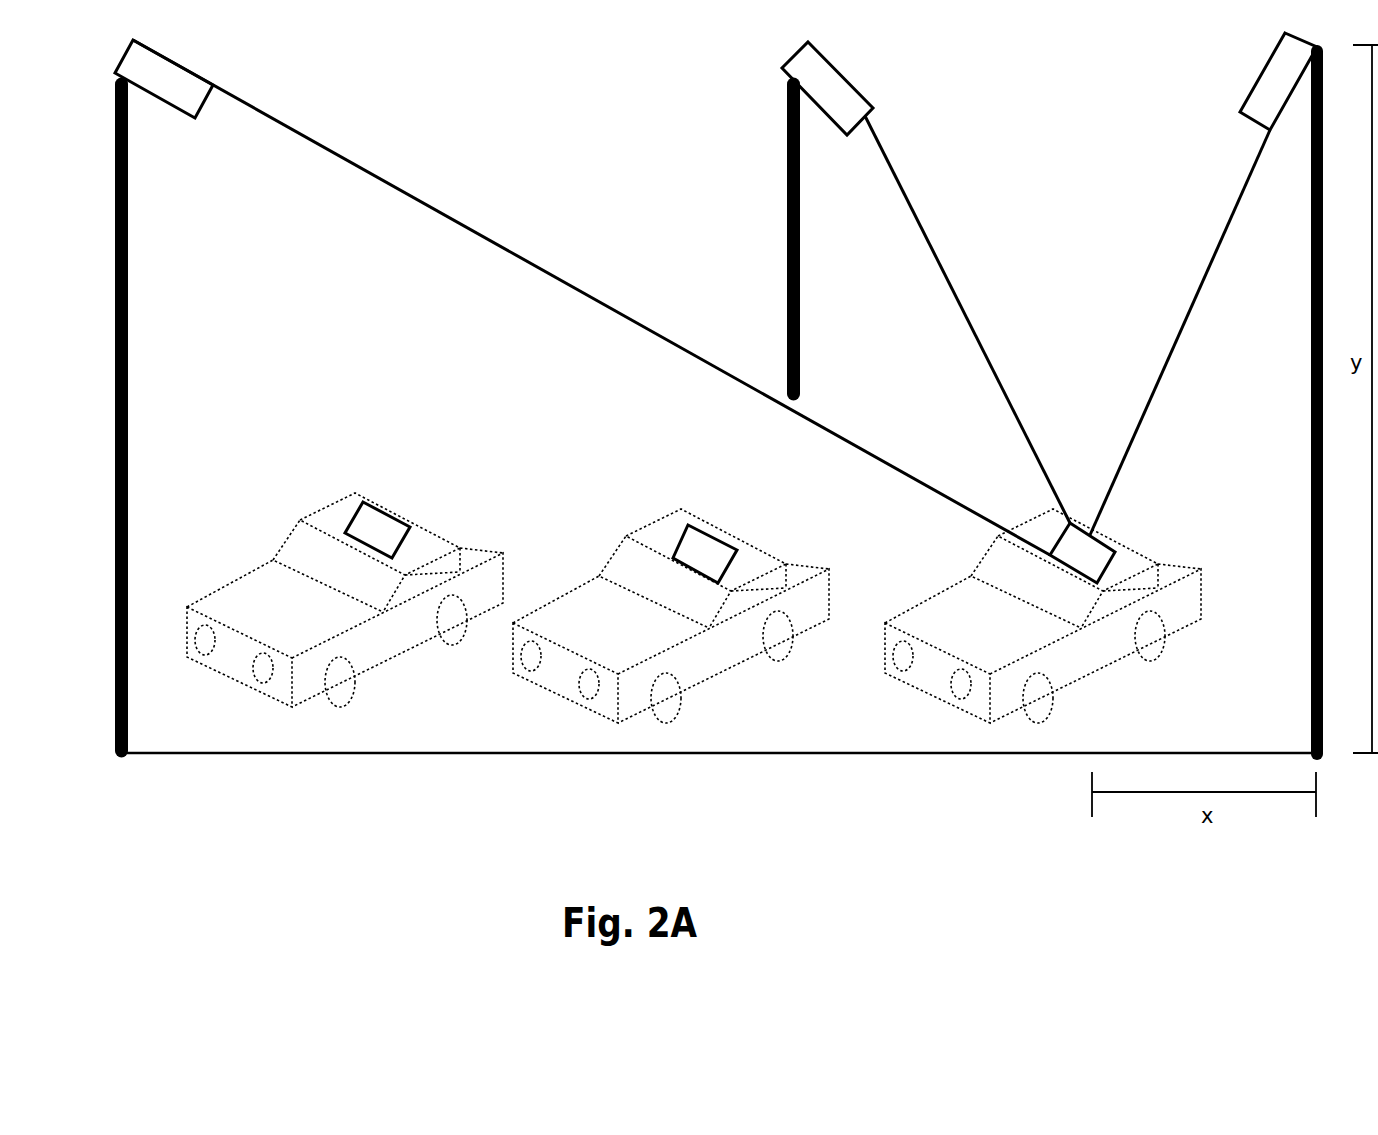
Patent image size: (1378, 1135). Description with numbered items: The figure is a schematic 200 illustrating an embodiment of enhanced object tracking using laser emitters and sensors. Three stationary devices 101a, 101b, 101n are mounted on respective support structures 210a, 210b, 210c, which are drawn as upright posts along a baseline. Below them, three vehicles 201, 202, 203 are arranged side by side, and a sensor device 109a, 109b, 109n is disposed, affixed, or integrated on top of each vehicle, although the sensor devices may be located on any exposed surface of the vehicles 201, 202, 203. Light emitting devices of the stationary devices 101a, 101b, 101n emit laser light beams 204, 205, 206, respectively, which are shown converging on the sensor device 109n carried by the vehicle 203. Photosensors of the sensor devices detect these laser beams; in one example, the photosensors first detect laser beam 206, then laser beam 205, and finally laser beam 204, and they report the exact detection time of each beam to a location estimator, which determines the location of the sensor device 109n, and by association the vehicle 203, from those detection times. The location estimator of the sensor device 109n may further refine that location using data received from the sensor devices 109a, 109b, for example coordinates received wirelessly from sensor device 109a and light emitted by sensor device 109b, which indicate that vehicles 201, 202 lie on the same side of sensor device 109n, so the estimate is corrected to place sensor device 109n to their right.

The schematic 200 is at (887, 943).
The stationary device 101a is at (183, 68).
The stationary device 101b is at (832, 63).
The stationary device 101n is at (1267, 63).
The sensor device 109a is at (383, 533).
The sensor device 109b is at (700, 550).
The sensor device 109n is at (1097, 583).
The vehicle 201 is at (402, 660).
The vehicle 202 is at (737, 660).
The vehicle 203 is at (1110, 660).
The laser light beam 204 is at (323, 150).
The laser light beam 205 is at (912, 207).
The laser light beam 206 is at (1247, 187).
The support structure 210a is at (115, 178).
The support structure 210b is at (788, 118).
The support structure 210c is at (1312, 315).